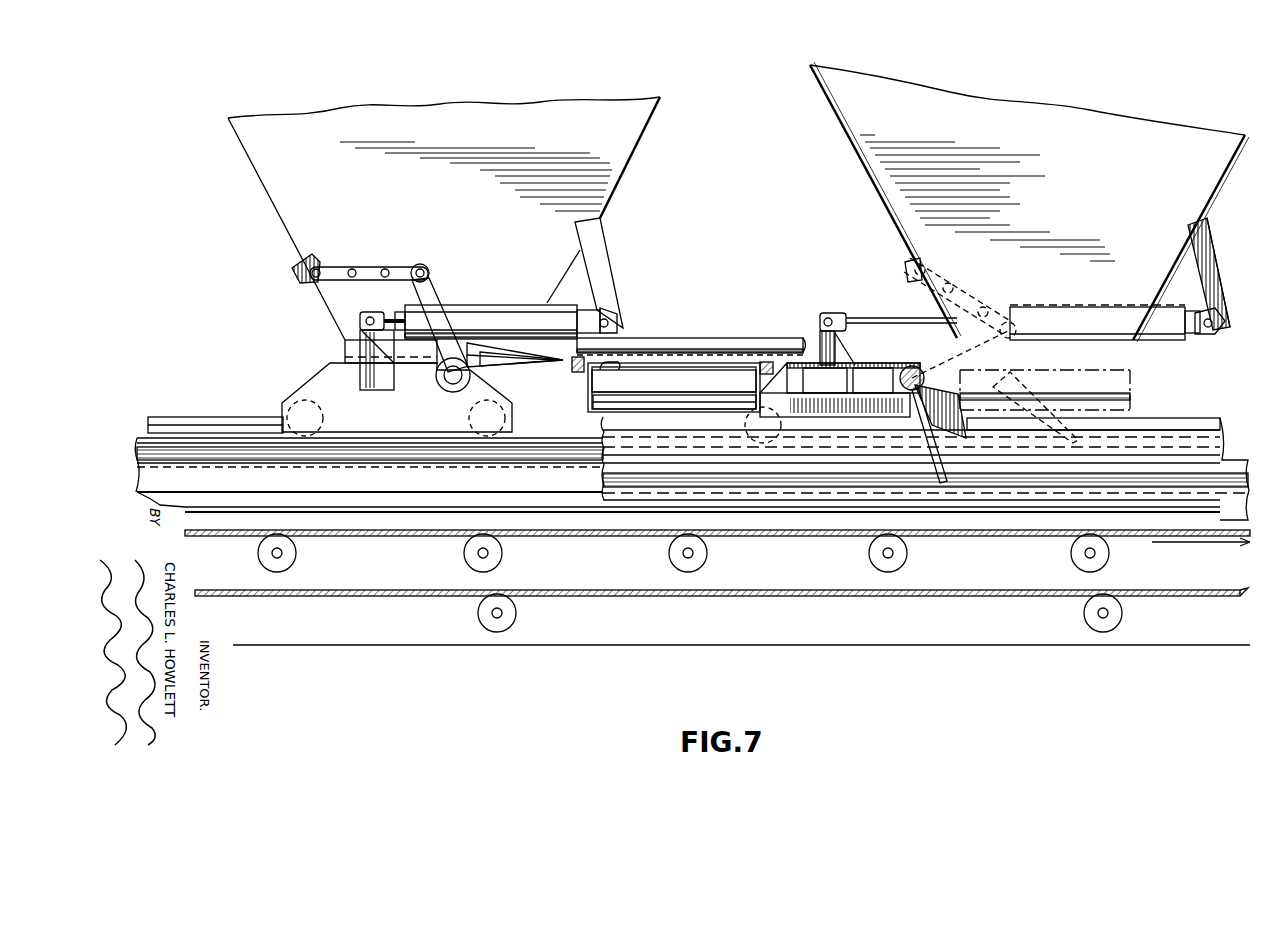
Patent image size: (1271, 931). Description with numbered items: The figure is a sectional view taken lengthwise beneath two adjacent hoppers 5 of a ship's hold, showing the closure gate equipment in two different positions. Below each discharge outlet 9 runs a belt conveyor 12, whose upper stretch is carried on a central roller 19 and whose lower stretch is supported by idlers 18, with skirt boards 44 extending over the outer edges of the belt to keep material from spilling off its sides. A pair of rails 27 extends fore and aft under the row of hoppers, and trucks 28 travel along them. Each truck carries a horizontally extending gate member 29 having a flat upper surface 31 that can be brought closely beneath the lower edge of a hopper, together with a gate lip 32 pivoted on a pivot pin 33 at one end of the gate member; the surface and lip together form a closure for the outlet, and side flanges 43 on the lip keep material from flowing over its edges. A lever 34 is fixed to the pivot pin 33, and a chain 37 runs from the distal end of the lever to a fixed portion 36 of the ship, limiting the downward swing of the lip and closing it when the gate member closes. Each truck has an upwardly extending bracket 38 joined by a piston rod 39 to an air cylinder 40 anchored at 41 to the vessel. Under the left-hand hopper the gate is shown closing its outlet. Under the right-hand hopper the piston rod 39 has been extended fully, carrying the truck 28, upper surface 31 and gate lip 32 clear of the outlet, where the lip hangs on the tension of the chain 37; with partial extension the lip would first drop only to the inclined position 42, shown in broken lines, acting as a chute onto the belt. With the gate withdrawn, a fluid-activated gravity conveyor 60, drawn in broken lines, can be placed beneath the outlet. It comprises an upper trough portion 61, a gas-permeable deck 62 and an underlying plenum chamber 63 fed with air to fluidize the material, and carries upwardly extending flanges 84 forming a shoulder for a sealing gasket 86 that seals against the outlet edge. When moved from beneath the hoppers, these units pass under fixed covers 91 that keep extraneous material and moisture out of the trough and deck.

The hopper 5 is at (623, 168).
The discharge outlet 9 is at (1140, 370).
The belt conveyor 12 is at (1024, 548).
The idler 18 is at (514, 626).
The central roller 19 is at (500, 565).
The rail 27 is at (143, 437).
The truck 28 is at (291, 383).
The gate member 29 is at (815, 385).
The upper surface 31 is at (332, 362).
The gate lip 32 is at (534, 368).
The pivot pin 33 is at (453, 385).
The lever 34 is at (436, 288).
The fixed portion of the ship 36 is at (312, 260).
The chain 37 is at (372, 268).
The bracket 38 is at (394, 376).
The piston rod 39 is at (390, 312).
The air cylinder 40 is at (502, 305).
The anchor 41 is at (610, 316).
The inclined position 42 is at (1048, 450).
The side flange 43 is at (500, 362).
The skirt board 44 is at (205, 417).
The fluid-activated gravity conveyor 60 is at (710, 368).
The upper trough portion 61 is at (680, 386).
The gas-permeable deck 62 is at (662, 400).
The plenum chamber 63 is at (688, 398).
The upwardly-extending flange 84 is at (578, 373).
The sealing gasket 86 is at (604, 365).
The fixed cover 91 is at (670, 350).